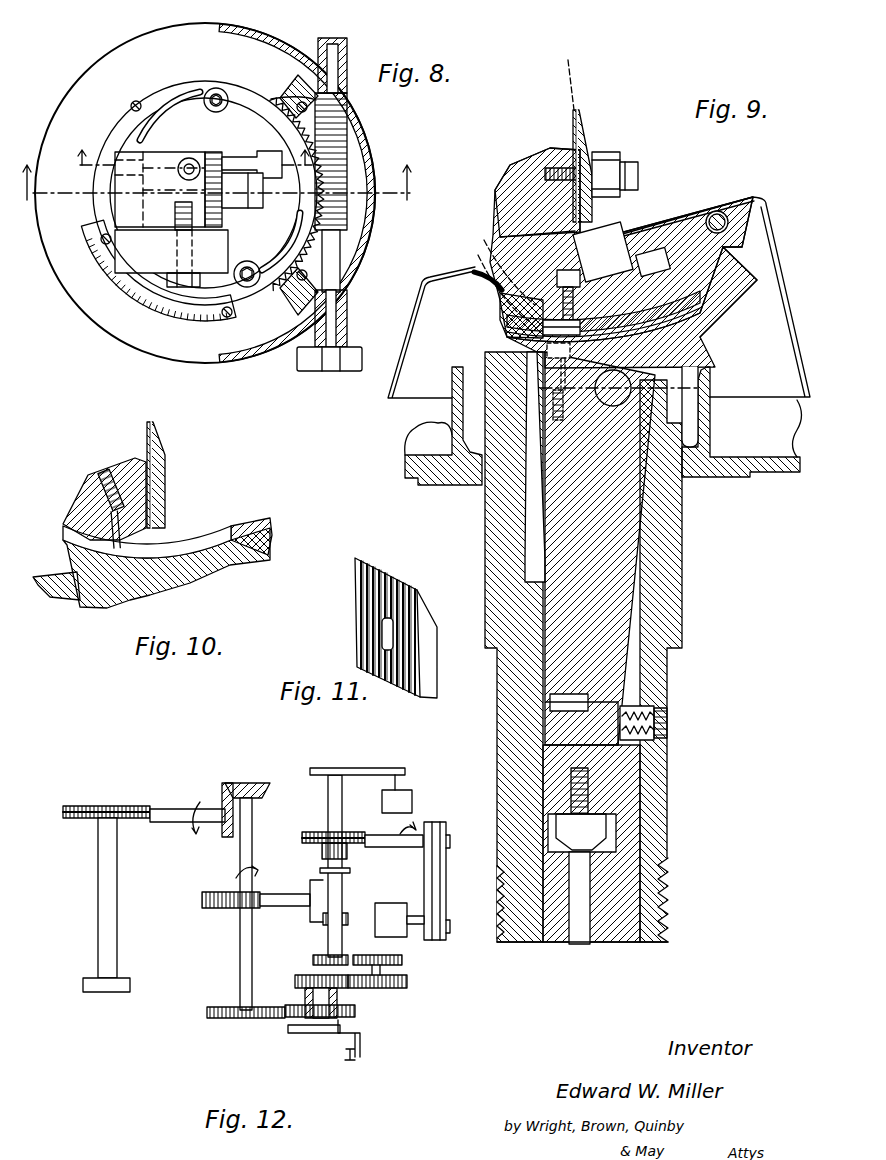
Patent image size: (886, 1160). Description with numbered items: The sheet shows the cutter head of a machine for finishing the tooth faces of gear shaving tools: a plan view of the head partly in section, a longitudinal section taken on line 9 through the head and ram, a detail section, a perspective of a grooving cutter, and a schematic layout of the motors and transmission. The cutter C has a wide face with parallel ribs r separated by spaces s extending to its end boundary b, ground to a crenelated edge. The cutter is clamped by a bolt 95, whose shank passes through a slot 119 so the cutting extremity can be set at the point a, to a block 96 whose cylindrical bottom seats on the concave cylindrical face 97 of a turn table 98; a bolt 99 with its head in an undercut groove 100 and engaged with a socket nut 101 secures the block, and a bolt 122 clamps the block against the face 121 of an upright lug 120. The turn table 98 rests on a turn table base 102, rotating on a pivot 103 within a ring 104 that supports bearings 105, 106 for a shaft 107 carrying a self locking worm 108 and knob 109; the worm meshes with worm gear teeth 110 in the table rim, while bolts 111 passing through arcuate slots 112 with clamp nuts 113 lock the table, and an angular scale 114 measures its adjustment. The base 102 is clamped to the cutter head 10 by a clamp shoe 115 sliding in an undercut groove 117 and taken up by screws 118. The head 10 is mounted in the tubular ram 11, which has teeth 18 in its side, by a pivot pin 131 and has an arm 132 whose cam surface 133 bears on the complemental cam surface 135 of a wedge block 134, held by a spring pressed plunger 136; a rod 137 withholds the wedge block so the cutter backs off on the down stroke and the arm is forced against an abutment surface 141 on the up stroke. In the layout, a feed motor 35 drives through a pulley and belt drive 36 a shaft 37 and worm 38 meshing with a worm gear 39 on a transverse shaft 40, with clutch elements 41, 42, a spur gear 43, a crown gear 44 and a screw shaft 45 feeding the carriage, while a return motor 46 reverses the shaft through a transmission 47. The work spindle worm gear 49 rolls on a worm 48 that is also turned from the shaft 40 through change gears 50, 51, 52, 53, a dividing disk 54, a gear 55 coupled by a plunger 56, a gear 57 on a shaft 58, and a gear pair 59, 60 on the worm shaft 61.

In FIG. 8, the section line 9— 9 is at (215, 191).
In FIG. 8, the cutter head 10 is at (183, 161).
In FIG. 9, the cutter head 10 is at (672, 347).
In FIG. 9, the ram or spindle 11 is at (660, 552).
In FIG. 9, the teeth 18 is at (668, 895).
In FIG. 12, the feed motor 35 is at (395, 903).
In FIG. 12, the pulley and belt drive 36 is at (446, 842).
In FIG. 12, the shaft 37 is at (381, 848).
In FIG. 12, the worm 38 is at (336, 830).
In FIG. 12, the worm gear 39 is at (306, 832).
In FIG. 12, the transverse shaft 40 is at (342, 896).
In FIG. 12, the one way clutch element 41 is at (322, 850).
In FIG. 12, the complemental clutch element 42 is at (320, 871).
In FIG. 12, the spur gear 43 is at (345, 925).
In FIG. 12, the crown gear 44 is at (312, 912).
In FIG. 12, the screw shaft 45 is at (272, 906).
In FIG. 12, the return motor 46 is at (410, 802).
In FIG. 12, the belt and pulley transmission 47 is at (380, 768).
In FIG. 12, the worm or screw 48 is at (100, 806).
In FIG. 12, the worm gear 49 is at (76, 806).
In FIG. 12, the change gear 50 is at (313, 959).
In FIG. 12, the change gear 51 is at (402, 960).
In FIG. 12, the change gear 52 is at (407, 982).
In FIG. 12, the change gear 53 is at (296, 980).
In FIG. 12, the dividing head or disk 54 is at (290, 1030).
In FIG. 12, the gear 55 is at (355, 1010).
In FIG. 12, the plunger 56 is at (340, 1048).
In FIG. 12, the gear 57 is at (222, 1007).
In FIG. 12, the shaft 58 is at (240, 932).
In FIG. 12, the gear 59 is at (258, 785).
In FIG. 12, the gear 60 is at (222, 784).
In FIG. 12, the shaft of the worm 61 is at (165, 808).
In FIG. 9, the bolt 95 is at (598, 172).
In FIG. 8, the block 96 is at (173, 152).
In FIG. 9, the block 96 is at (543, 160).
In FIG. 9, the concave cylindrical upper face 97 is at (500, 240).
In FIG. 8, the turn table 98 is at (257, 103).
In FIG. 9, the turn table 98 is at (500, 258).
In FIG. 10, the turn table 98 is at (268, 538).
In FIG. 9, the bolt 99 is at (512, 200).
In FIG. 10, the bolt 99 is at (130, 530).
In FIG. 8, the undercut groove 100 is at (267, 156).
In FIG. 10, the undercut groove 100 is at (200, 540).
In FIG. 10, the socket nut 101 is at (105, 478).
In FIG. 9, the turn table base 102 is at (505, 332).
In FIG. 10, the turn table base 102 is at (125, 590).
In FIG. 9, the pivot 103 is at (640, 235).
In FIG. 8, the ring 104 is at (348, 202).
In FIG. 9, the ring 104 is at (485, 280).
In FIG. 10, the ring 104 is at (52, 596).
In FIG. 8, the bearing 105 is at (348, 63).
In FIG. 8, the bearing 106 is at (347, 320).
In FIG. 8, the shaft 107 is at (330, 260).
In FIG. 8, the worm 108 is at (343, 167).
In FIG. 9, the worm 108 is at (720, 212).
In FIG. 8, the knob 109 is at (347, 371).
In FIG. 8, the worm gear teeth 110 is at (320, 133).
In FIG. 8, the bolts 111 is at (222, 102).
In FIG. 8, the arcuate slots 112 is at (163, 115).
In FIG. 8, the clamp nuts 113 is at (228, 122).
In FIG. 8, the angular scale 114 is at (195, 322).
In FIG. 9, the clamp shoe 115 is at (660, 320).
In FIG. 9, the undercut groove 117 is at (725, 268).
In FIG. 9, the screws 118 is at (665, 250).
In FIG. 9, the slot 119 is at (592, 197).
In FIG. 11, the slot 119 is at (382, 635).
In FIG. 8, the upright lug 120 is at (147, 253).
In FIG. 8, the face 121 is at (147, 228).
In FIG. 8, the bolt 122 is at (190, 283).
In FIG. 9, the pivot pin 131 is at (615, 392).
In FIG. 9, the arm 132 is at (595, 640).
In FIG. 9, the cam surface 133 is at (600, 660).
In FIG. 9, the wedge block 134 is at (565, 778).
In FIG. 9, the cam surface 135 is at (566, 700).
In FIG. 9, the spring pressed plunger 136 is at (655, 672).
In FIG. 9, the rod 137 is at (583, 944).
In FIG. 9, the abutment surface 141 is at (630, 748).
In FIG. 8, the cutter C is at (238, 147).
In FIG. 9, the cutter C is at (585, 140).
In FIG. 10, the cutter C is at (160, 452).
In FIG. 11, the cutter C is at (428, 630).
In FIG. 9, the intersection point a is at (578, 105).
In FIG. 11, the end boundary b is at (390, 578).
In FIG. 11, the ribs r is at (365, 580).
In FIG. 11, the spaces s is at (365, 611).